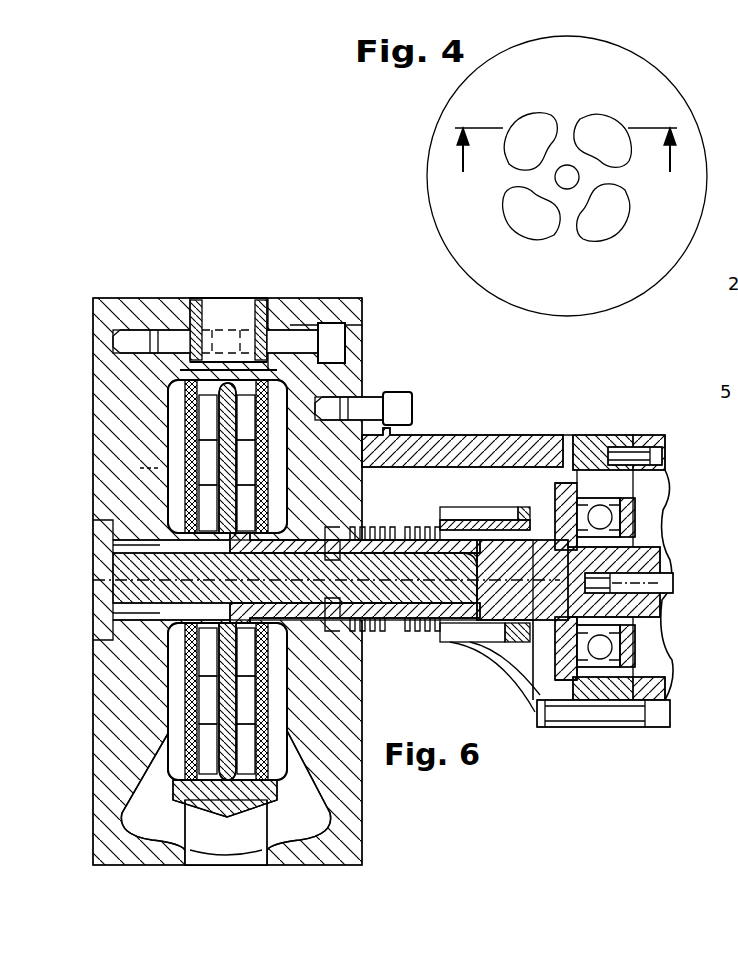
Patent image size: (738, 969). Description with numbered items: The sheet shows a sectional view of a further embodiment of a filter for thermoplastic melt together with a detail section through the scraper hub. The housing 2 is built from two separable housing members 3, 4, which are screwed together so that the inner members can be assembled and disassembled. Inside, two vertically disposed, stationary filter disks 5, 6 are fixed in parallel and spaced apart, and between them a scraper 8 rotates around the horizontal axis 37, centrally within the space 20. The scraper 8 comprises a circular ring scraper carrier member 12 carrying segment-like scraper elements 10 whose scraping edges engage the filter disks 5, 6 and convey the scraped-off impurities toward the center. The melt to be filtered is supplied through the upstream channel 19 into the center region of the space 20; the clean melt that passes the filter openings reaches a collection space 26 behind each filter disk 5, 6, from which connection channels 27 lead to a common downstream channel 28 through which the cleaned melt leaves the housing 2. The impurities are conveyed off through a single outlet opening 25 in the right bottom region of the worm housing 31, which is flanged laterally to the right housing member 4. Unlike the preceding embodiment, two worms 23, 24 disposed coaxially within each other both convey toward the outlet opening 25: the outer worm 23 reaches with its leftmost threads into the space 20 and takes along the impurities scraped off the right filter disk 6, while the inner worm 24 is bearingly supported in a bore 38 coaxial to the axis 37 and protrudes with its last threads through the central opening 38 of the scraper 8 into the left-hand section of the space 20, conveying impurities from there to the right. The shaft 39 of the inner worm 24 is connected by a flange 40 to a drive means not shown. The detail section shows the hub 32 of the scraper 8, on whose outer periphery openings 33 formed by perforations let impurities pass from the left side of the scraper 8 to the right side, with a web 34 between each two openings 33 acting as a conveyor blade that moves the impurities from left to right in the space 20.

In FIG. 6, the housing 2 is at (372, 352).
In FIG. 6, the housing member 3 is at (125, 300).
In FIG. 6, the housing member 4 is at (310, 305).
In FIG. 6, the filter disk 5 is at (186, 368).
In FIG. 6, the filter disk 6 is at (287, 400).
In FIG. 4, the scraper 8 is at (427, 146).
In FIG. 6, the scraper element 10 is at (214, 392).
In FIG. 4, the scraper carrier member 12 is at (438, 192).
In FIG. 6, the scraper carrier member 12 is at (575, 581).
In FIG. 6, the upstream channel 19 is at (240, 322).
In FIG. 6, the space 20 is at (245, 723).
In FIG. 6, the worm 23 is at (368, 632).
In FIG. 6, the worm 24 is at (478, 520).
In FIG. 6, the outlet opening 25 is at (466, 632).
In FIG. 6, the collection space 26 is at (173, 440).
In FIG. 6, the connection channel 27 is at (270, 665).
In FIG. 6, the downstream channel 28 is at (232, 852).
In FIG. 6, the worm housing 31 is at (388, 522).
In FIG. 4, the hub 32 is at (587, 160).
In FIG. 4, the opening 33 is at (592, 128).
In FIG. 4, the web 34 is at (518, 177).
In FIG. 6, the axis 37 is at (326, 580).
In FIG. 6, the bore 38 is at (415, 525).
In FIG. 6, the shaft 39 is at (133, 610).
In FIG. 6, the flange 40 is at (128, 612).